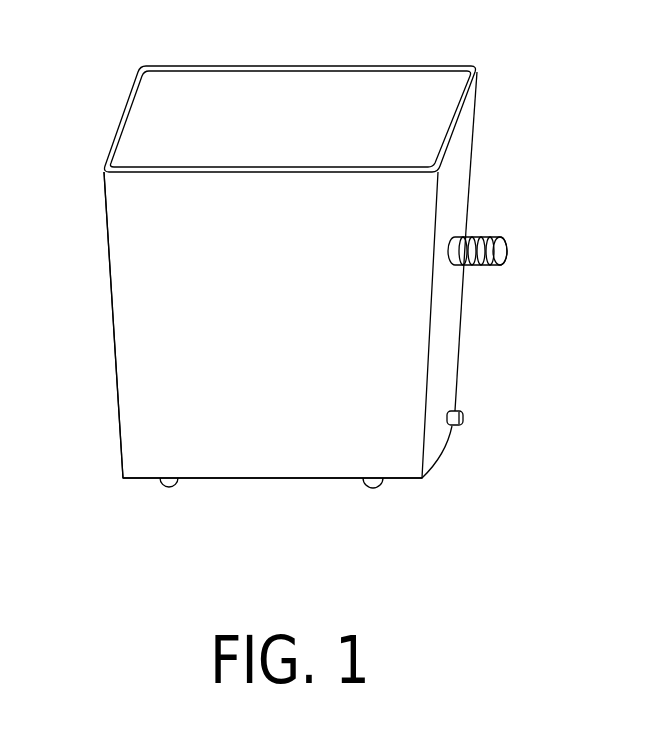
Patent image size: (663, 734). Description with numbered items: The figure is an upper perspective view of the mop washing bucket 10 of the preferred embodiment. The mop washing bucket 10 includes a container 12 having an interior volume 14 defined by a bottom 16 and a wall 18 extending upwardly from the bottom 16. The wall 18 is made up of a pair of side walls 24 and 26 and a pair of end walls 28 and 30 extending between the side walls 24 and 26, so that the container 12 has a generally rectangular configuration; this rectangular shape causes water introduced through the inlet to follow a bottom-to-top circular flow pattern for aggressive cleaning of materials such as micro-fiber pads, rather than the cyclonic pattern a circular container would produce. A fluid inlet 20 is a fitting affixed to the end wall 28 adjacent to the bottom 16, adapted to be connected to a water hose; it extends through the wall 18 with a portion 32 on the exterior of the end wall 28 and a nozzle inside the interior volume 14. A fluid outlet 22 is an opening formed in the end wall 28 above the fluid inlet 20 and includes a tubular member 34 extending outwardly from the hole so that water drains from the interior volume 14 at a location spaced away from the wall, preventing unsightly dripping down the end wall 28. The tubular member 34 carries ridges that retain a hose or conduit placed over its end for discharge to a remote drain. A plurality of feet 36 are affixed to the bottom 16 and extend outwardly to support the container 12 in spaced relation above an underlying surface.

The mop washing bucket 10 is at (560, 152).
The container 12 is at (128, 355).
The interior volume 14 is at (373, 85).
The bottom 16 is at (278, 480).
The wall 18 is at (462, 318).
The fluid inlet 20 is at (463, 412).
The fluid outlet 22 is at (507, 248).
The side wall 24 is at (281, 342).
The side wall 26 is at (314, 124).
The end wall 28 is at (465, 190).
The end wall 30 is at (106, 225).
The portion 32 is at (458, 412).
The tubular member 34 is at (478, 238).
The feet 36 is at (170, 492).